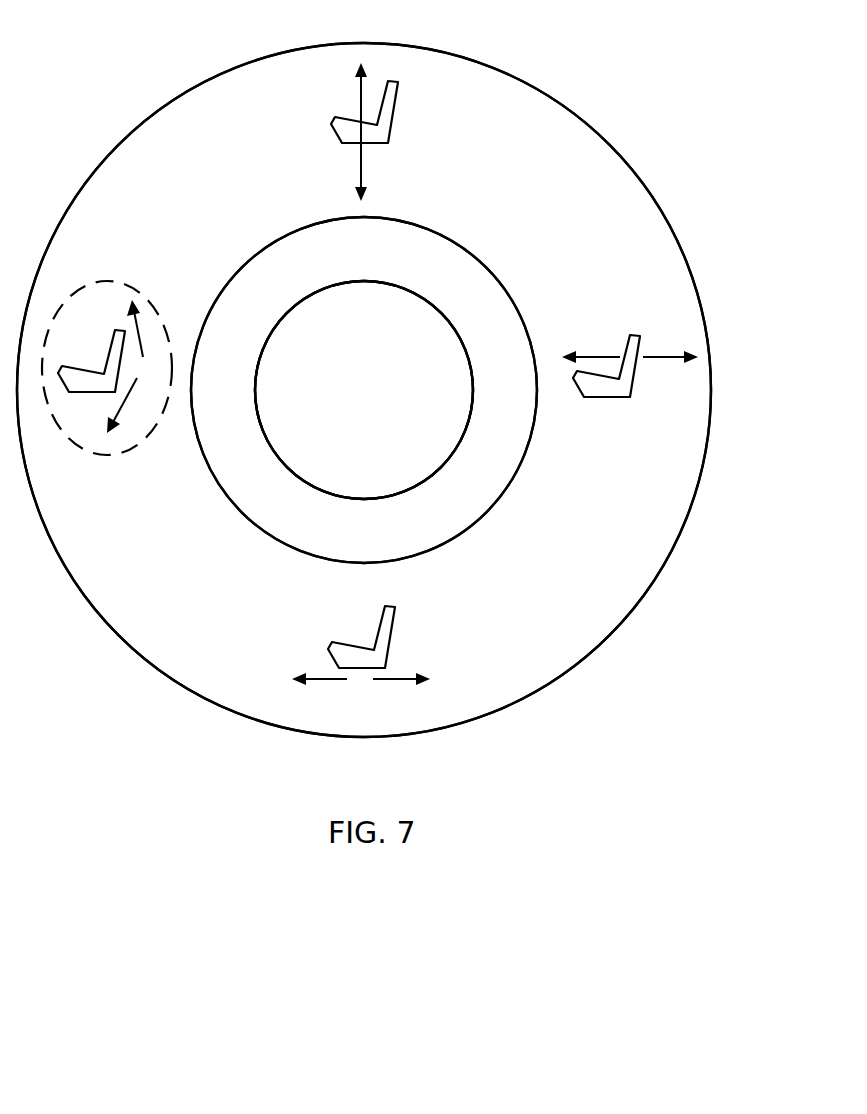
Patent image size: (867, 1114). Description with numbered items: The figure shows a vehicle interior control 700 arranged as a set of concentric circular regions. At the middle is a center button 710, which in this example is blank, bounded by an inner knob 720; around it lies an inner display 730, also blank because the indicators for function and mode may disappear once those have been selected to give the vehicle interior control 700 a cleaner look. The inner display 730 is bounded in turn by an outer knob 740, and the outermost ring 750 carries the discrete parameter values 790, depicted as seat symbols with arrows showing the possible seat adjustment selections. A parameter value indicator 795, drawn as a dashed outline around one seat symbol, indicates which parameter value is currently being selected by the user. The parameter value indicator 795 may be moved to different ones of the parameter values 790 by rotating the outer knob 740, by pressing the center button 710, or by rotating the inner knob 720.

The vehicle interior control 700 is at (178, 891).
The center button 710 is at (410, 337).
The inner knob 720 is at (433, 477).
The inner display 730 is at (487, 438).
The outer knob 740 is at (510, 487).
The outer region 750 is at (555, 575).
The discrete parameter values 790 is at (405, 110).
The parameter value indicator 795 is at (120, 282).